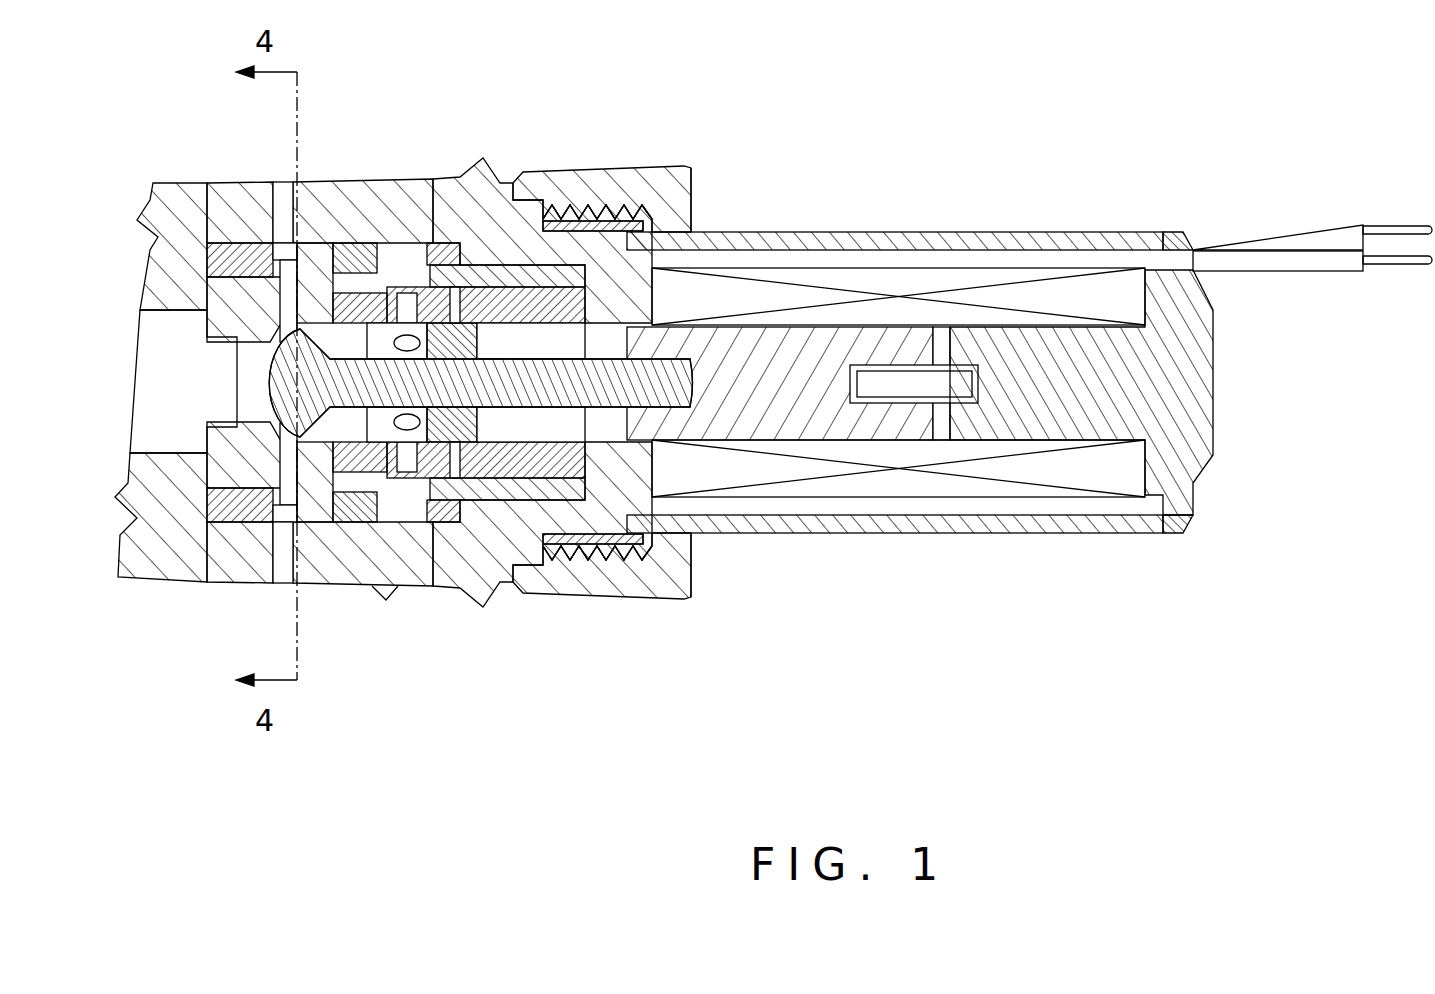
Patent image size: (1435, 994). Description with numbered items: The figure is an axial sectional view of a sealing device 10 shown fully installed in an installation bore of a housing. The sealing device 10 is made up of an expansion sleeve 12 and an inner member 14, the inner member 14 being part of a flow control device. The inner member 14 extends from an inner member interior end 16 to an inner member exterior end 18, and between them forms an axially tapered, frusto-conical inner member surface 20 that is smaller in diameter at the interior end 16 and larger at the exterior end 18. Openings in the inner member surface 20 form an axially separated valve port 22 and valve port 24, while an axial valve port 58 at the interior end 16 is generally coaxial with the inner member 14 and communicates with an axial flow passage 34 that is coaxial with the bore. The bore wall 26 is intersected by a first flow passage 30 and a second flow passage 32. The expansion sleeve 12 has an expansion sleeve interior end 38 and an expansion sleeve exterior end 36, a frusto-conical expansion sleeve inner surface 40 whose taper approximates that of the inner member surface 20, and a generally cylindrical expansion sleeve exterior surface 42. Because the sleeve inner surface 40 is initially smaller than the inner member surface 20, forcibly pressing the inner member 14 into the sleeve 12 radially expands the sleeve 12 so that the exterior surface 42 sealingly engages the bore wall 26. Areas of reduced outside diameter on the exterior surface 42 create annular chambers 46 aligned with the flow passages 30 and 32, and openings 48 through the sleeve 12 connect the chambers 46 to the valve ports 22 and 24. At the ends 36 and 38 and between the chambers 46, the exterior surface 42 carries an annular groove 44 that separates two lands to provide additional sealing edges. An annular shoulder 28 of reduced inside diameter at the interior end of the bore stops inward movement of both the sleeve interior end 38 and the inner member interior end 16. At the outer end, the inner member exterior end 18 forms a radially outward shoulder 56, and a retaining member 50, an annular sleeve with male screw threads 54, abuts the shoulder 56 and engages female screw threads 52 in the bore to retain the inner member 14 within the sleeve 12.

The sealing device 10 is at (779, 118).
The expansion sleeve 12 is at (372, 245).
The inner member 14 is at (410, 195).
The inner member interior end 16 is at (160, 215).
The inner member exterior end 18 is at (490, 262).
The inner member surface 20 is at (338, 272).
The valve port 22 is at (318, 270).
The valve port 24 is at (415, 280).
The installation bore wall 26 is at (432, 522).
The annular shoulder 28 is at (243, 515).
The first flow passage 30 is at (290, 255).
The second flow passage 32 is at (387, 265).
The axial flow passage 34 is at (175, 438).
The expansion sleeve exterior end 36 is at (497, 499).
The expansion sleeve interior end 38 is at (210, 500).
The expansion sleeve inner surface 40 is at (366, 598).
The expansion sleeve exterior surface 42 is at (217, 245).
The annular groove 44 is at (238, 545).
The annular chambers 46 is at (325, 522).
The openings 48 is at (398, 502).
The retaining member 50 is at (565, 218).
The female screw threads 52 is at (668, 210).
The male screw threads 54 is at (615, 213).
The shoulder 56 is at (543, 217).
The axial valve port 58 is at (237, 380).